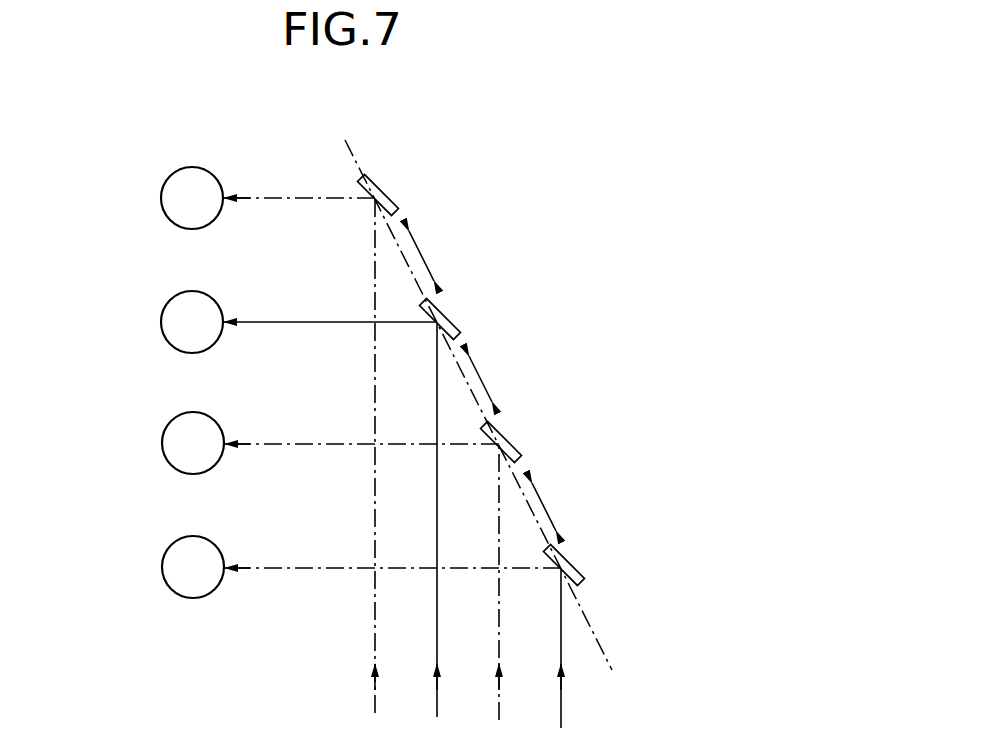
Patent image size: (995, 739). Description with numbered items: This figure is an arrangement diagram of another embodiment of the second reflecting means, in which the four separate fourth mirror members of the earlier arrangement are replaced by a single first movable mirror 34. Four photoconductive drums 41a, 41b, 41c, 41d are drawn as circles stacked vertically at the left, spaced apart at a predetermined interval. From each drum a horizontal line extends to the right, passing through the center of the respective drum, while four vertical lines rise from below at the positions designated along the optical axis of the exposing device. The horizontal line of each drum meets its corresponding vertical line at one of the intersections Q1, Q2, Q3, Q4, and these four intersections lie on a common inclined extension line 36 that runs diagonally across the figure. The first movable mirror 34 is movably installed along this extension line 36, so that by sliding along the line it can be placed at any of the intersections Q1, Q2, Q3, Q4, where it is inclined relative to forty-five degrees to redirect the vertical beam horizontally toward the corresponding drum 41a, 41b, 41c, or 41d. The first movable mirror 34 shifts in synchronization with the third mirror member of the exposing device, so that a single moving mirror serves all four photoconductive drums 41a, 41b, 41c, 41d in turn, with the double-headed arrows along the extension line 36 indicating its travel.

The first movable mirror 34 is at (445, 410).
The extension line 36 is at (602, 645).
The photoconductive drum 41a is at (161, 198).
The photoconductive drum 41b is at (161, 329).
The photoconductive drum 41c is at (162, 447).
The photoconductive drum 41d is at (162, 569).
The intersection Q1 is at (374, 200).
The intersection Q2 is at (436, 324).
The intersection Q3 is at (497, 448).
The intersection Q4 is at (550, 595).